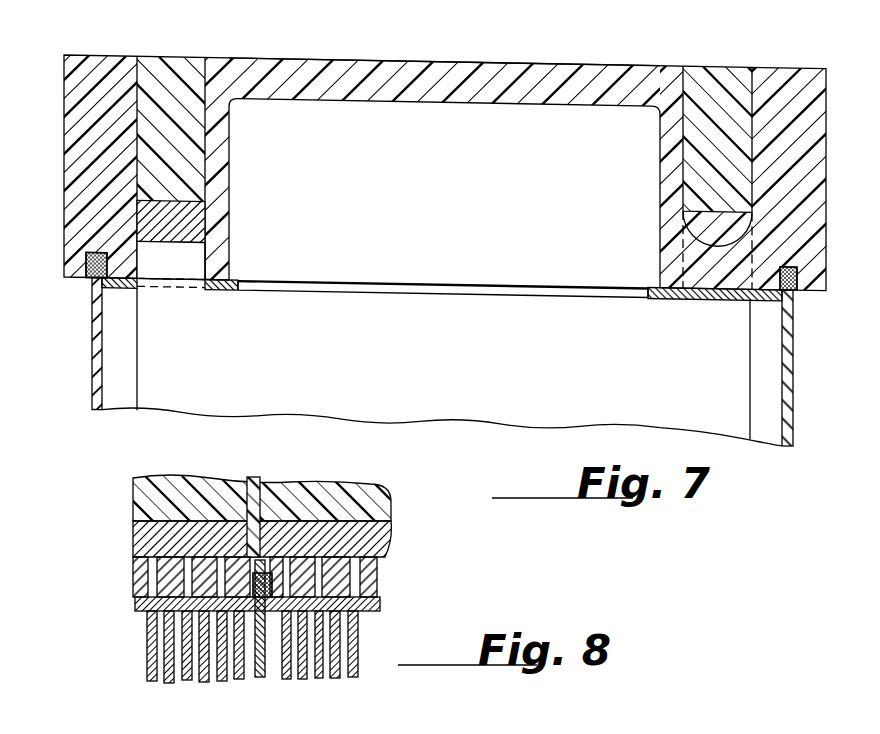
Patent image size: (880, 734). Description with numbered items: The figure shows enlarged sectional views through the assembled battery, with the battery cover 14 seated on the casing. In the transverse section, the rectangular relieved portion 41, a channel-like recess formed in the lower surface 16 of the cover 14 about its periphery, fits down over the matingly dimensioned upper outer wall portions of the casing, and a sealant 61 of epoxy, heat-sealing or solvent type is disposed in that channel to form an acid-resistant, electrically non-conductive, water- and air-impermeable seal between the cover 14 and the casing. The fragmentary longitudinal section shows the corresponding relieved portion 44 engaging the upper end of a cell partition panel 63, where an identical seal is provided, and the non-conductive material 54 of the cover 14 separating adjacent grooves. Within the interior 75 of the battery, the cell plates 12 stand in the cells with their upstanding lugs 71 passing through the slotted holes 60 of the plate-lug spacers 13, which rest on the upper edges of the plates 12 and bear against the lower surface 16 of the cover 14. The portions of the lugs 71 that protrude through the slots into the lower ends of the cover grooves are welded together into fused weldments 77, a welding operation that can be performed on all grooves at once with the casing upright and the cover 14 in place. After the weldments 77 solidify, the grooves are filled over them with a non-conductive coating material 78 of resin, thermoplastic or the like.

In FIG. 8, the cell plates 12 is at (355, 648).
In FIG. 7, the plate-lug spacers 13 is at (222, 288).
In FIG. 8, the plate-lug spacers 13 is at (380, 603).
In FIG. 7, the battery cover 14 is at (640, 64).
In FIG. 7, the lower surface 16 is at (807, 279).
In FIG. 7, the rectangular relieved portion 41 is at (87, 257).
In FIG. 8, the relieved portion 44 is at (264, 572).
In FIG. 8, the non-conductive material 54 is at (256, 492).
In FIG. 7, the slotted holes 60 is at (203, 288).
In FIG. 7, the sealant 61 is at (117, 289).
In FIG. 8, the cell partition panel 63 is at (262, 677).
In FIG. 7, the lugs 71 is at (185, 260).
In FIG. 7, the interior 75 is at (512, 264).
In FIG. 7, the weldments 77 is at (187, 218).
In FIG. 8, the weldments 77 is at (368, 533).
In FIG. 7, the non-conductive coating material 78 is at (173, 75).